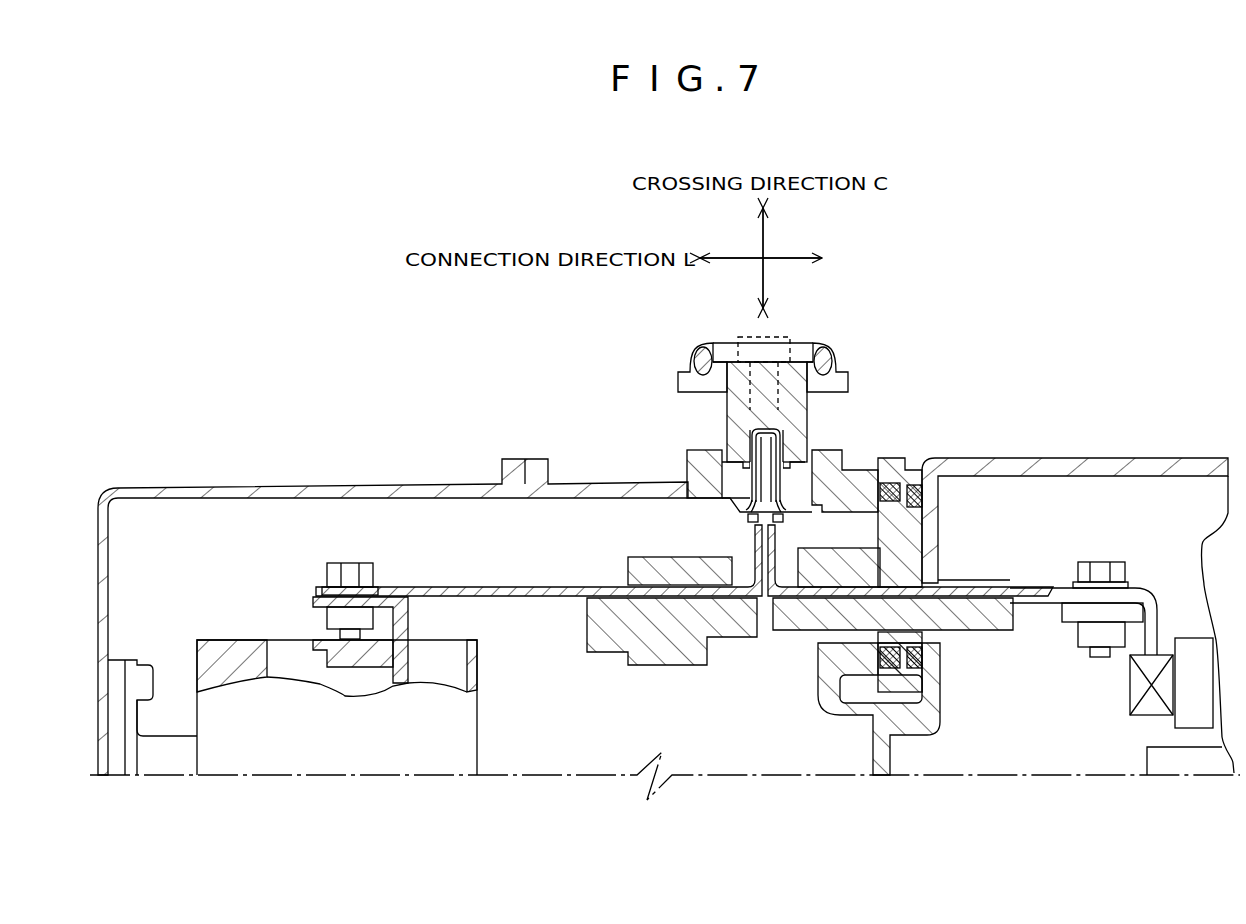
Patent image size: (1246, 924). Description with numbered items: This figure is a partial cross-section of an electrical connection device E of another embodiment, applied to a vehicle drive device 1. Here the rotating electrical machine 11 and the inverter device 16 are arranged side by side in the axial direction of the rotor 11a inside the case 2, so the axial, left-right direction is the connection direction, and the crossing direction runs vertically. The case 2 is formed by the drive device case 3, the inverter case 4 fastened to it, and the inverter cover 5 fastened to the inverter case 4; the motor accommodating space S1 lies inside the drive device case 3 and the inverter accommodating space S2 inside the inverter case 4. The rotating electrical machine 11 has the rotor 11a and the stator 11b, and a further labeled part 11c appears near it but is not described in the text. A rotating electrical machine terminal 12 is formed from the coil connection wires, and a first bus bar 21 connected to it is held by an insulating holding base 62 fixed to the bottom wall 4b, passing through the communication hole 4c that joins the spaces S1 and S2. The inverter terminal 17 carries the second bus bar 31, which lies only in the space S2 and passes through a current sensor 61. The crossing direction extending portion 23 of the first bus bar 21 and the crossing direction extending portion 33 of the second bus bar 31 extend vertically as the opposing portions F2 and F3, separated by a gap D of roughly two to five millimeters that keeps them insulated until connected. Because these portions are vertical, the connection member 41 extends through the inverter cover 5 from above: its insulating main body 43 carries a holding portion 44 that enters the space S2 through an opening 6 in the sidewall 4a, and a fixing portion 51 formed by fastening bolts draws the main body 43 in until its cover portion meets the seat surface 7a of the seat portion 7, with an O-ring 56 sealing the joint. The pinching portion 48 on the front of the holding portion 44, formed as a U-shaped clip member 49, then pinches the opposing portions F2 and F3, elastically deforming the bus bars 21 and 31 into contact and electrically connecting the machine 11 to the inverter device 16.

The vehicle drive device 1 is at (243, 311).
The case 2 is at (666, 568).
The drive device case 3 is at (1093, 457).
The inverter case 4 is at (766, 578).
The sidewall 4a is at (610, 482).
The bottom wall 4b is at (873, 740).
The communication hole 4c is at (922, 536).
The inverter cover 5 is at (326, 488).
The opening 6 is at (800, 494).
The seat portion 7 is at (687, 462).
The seat surface 7a is at (700, 449).
The rotating electrical machine 11 is at (1106, 711).
The rotor 11a is at (1197, 648).
The stator 11b is at (1205, 768).
The connector / harness 11c is at (1130, 707).
The rotating electrical machine terminal 12 is at (1152, 600).
The inverter device 16 is at (252, 765).
The inverter terminal 17 is at (312, 601).
The first bus bar 21 is at (1062, 585).
The crossing direction extending portion 23 is at (910, 556).
The second bus bar 31 is at (512, 586).
The crossing direction extending portion 33 is at (539, 559).
The connection member 41 is at (806, 343).
The main body 43 is at (694, 436).
The holding portion 44 is at (727, 413).
The pinching portion 48 is at (839, 447).
The clip member 49 is at (783, 447).
The fixing portion 51 is at (738, 342).
The O-ring 56 is at (694, 358).
The current sensor 61 is at (597, 653).
The holding base 62 is at (925, 557).
The electrical connection device E is at (912, 349).
The opposing portion F2 is at (878, 546).
The opposing portion F3 is at (755, 541).
The motor accommodating space S1 is at (984, 721).
The inverter accommodating space S2 is at (652, 721).
The gap D is at (762, 596).